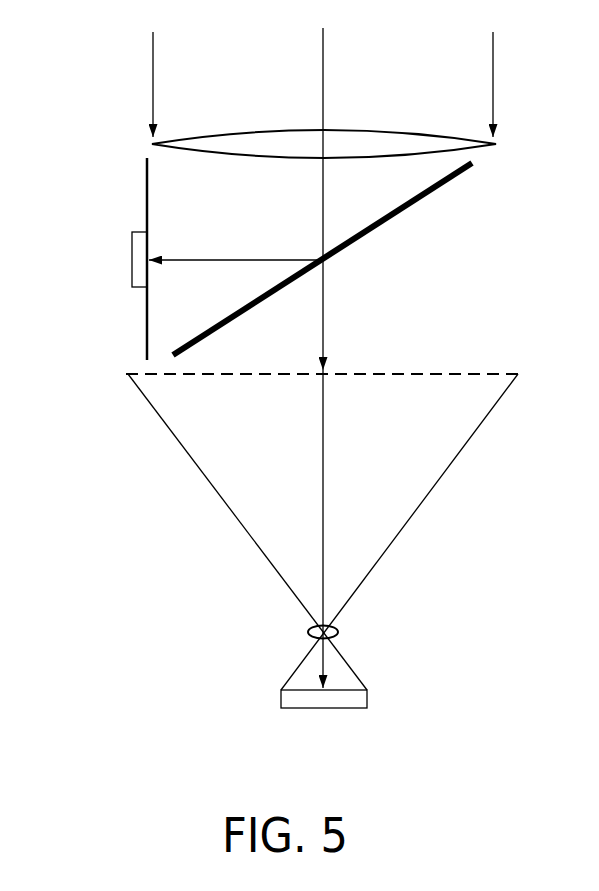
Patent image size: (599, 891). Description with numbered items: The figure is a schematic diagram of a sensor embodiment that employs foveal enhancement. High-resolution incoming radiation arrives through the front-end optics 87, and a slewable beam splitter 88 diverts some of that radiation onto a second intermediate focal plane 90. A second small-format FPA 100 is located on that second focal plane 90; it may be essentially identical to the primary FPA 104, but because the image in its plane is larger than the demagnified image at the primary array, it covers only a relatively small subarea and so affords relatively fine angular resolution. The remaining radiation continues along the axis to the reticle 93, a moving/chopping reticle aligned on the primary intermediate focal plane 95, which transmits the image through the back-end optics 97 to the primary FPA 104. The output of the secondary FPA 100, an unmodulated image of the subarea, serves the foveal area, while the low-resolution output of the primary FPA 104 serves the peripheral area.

The front-end optics 87 is at (356, 127).
The slewable beam splitter 88 is at (434, 193).
The second intermediate focal plane 90 is at (145, 190).
The reticle 93 is at (473, 373).
The primary intermediate focal plane 95 is at (401, 352).
The back-end optics 97 is at (344, 630).
The second small-format FPA 100 is at (130, 265).
The primary FPA 104 is at (281, 697).